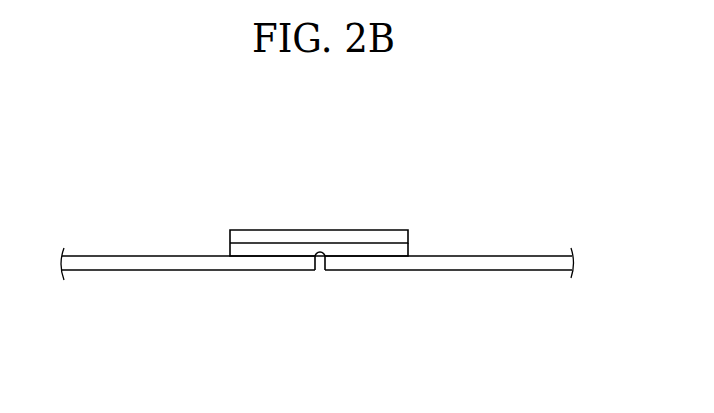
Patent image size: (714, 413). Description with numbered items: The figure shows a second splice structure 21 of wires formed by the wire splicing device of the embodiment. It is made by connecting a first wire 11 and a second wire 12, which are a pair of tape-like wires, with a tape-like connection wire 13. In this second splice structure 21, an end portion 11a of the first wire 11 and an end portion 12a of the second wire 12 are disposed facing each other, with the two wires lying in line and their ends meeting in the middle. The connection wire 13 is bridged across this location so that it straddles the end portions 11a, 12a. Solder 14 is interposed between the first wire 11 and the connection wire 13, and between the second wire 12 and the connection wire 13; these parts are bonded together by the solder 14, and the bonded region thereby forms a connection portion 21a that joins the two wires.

The first wire 11 is at (155, 262).
The second wire 12 is at (485, 262).
The end portion of the first wire 11a is at (314, 265).
The end portion of the second wire 12a is at (320, 268).
The connection wire 13 is at (328, 230).
The solder 14 is at (400, 251).
The second splice structure 21 is at (546, 184).
The connection portion 21a is at (383, 194).